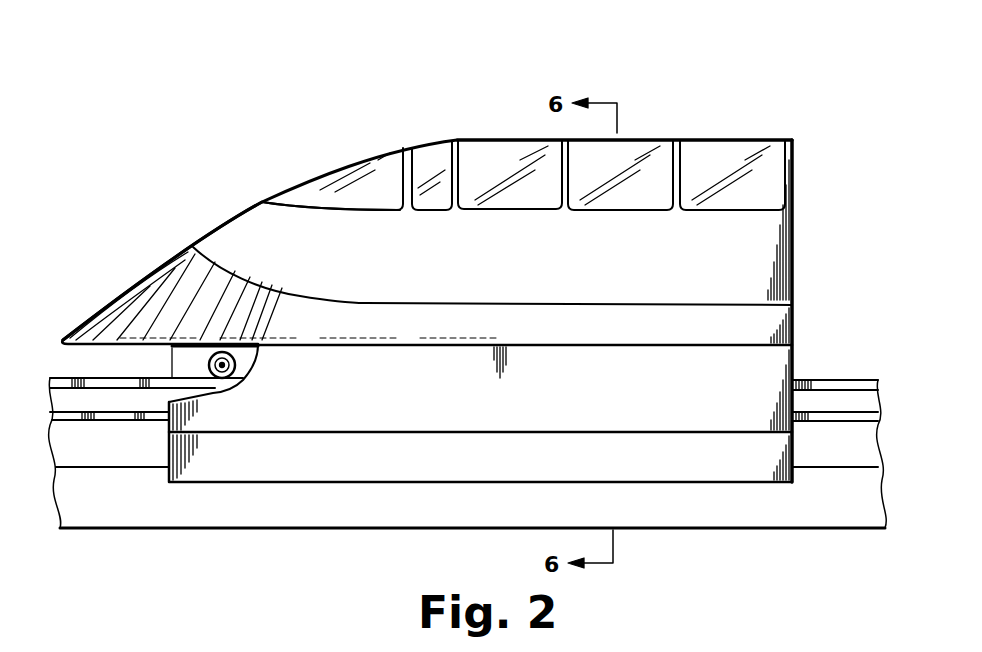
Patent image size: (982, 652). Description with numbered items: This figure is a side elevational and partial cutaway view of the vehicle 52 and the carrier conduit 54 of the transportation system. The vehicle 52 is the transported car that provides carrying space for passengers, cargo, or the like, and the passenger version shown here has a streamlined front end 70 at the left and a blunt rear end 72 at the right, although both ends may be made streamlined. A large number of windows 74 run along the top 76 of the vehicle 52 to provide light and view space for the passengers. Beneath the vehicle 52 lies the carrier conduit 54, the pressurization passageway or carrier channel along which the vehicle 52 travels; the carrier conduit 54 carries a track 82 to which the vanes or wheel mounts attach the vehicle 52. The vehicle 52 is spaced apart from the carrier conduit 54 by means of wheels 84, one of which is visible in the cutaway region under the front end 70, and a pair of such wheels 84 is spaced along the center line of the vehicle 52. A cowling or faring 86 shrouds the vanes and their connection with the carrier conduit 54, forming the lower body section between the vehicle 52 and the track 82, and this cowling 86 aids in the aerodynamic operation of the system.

The vehicle 52 is at (749, 111).
The carrier conduit 54 is at (718, 503).
The streamlined front end 70 is at (165, 293).
The rear end 72 is at (794, 186).
The windows 74 is at (535, 160).
The top 76 is at (633, 140).
The track 82 is at (805, 400).
The wheels 84 is at (207, 364).
The cowling 86 is at (614, 398).